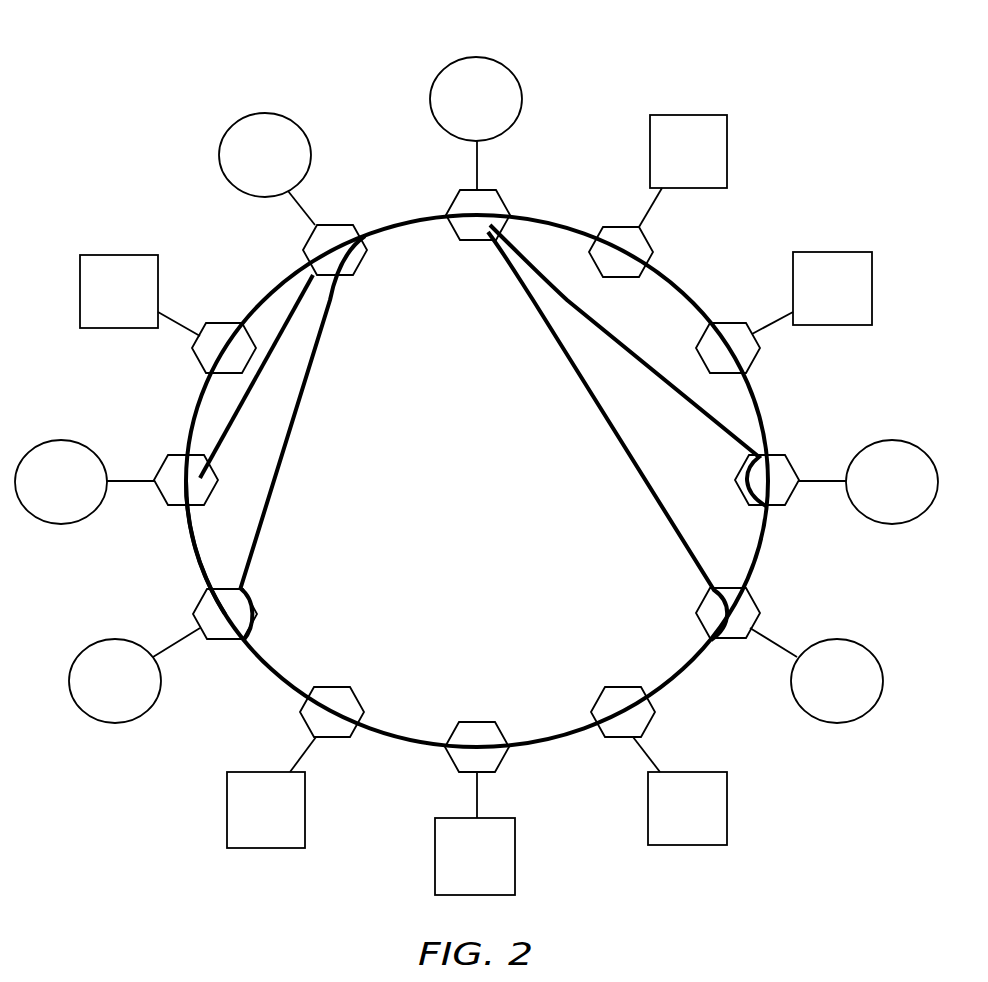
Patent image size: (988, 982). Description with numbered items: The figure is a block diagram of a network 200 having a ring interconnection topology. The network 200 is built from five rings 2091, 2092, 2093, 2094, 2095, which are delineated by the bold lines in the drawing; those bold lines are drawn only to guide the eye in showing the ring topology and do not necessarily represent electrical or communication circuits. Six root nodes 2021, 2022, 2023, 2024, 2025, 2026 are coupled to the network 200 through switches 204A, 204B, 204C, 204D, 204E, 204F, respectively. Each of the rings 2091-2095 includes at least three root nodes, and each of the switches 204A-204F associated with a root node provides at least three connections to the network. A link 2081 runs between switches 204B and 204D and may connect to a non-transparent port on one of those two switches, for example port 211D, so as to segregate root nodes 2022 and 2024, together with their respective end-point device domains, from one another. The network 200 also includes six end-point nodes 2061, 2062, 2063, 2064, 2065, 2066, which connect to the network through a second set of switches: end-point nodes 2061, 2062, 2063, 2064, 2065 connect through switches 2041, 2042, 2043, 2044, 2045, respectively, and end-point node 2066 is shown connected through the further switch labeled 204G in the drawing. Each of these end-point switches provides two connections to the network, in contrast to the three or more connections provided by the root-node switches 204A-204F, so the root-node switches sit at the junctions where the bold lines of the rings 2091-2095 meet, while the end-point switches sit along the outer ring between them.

The network 200 is at (138, 78).
The root node 2021 is at (498, 115).
The root node 2022 is at (285, 170).
The root node 2023 is at (81, 497).
The root node 2024 is at (135, 696).
The root node 2025 is at (857, 696).
The root node 2026 is at (912, 497).
The end-point node 2061 is at (139, 305).
The end-point node 2062 is at (286, 824).
The end-point node 2063 is at (495, 870).
The end-point node 2064 is at (707, 822).
The end-point node 2065 is at (852, 302).
The end-point node 2066 is at (708, 165).
The switch 204A is at (497, 195).
The switch 204B is at (336, 225).
The switch 204C is at (184, 507).
The switch 204D is at (207, 592).
The switch 204E is at (748, 598).
The switch 204F is at (787, 460).
The switch node 204G is at (648, 240).
The switch 2041 is at (203, 362).
The switch 2042 is at (303, 722).
The switch 2043 is at (503, 757).
The switch 2044 is at (655, 705).
The switch 2045 is at (758, 350).
The port 211D is at (243, 586).
The link 2081 is at (283, 453).
The ring 2091 is at (208, 415).
The ring 2092 is at (246, 532).
The ring 2093 is at (670, 329).
The ring 2094 is at (695, 466).
The ring 2095 is at (491, 481).